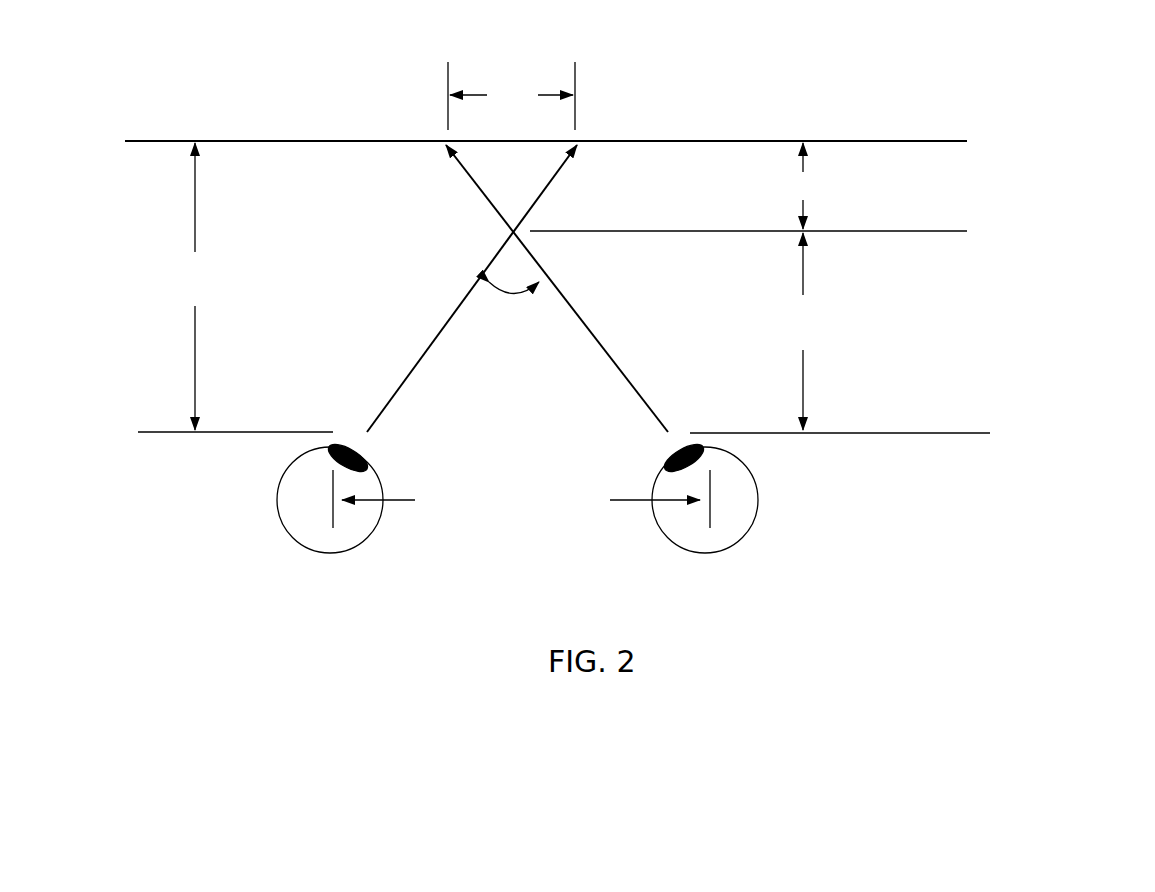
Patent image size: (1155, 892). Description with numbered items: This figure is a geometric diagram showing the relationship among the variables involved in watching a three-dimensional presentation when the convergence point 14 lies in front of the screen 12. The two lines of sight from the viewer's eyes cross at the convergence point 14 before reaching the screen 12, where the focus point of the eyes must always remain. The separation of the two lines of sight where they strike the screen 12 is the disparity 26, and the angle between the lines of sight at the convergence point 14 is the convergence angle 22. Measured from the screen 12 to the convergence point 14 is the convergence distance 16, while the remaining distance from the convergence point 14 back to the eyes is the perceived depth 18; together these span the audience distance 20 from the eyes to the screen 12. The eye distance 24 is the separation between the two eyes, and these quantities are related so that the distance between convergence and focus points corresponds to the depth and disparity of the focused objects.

The screen 12 is at (939, 134).
The convergence point 14 is at (503, 229).
The convergence distance (Cd) 16 is at (846, 186).
The perceived depth (Dp) 18 is at (818, 331).
The audience distance (Ad) 20 is at (206, 286).
The convergence angle (Ca) 22 is at (515, 330).
The eye distance (Ed) 24 is at (521, 517).
The disparity (Ds) 26 is at (511, 96).